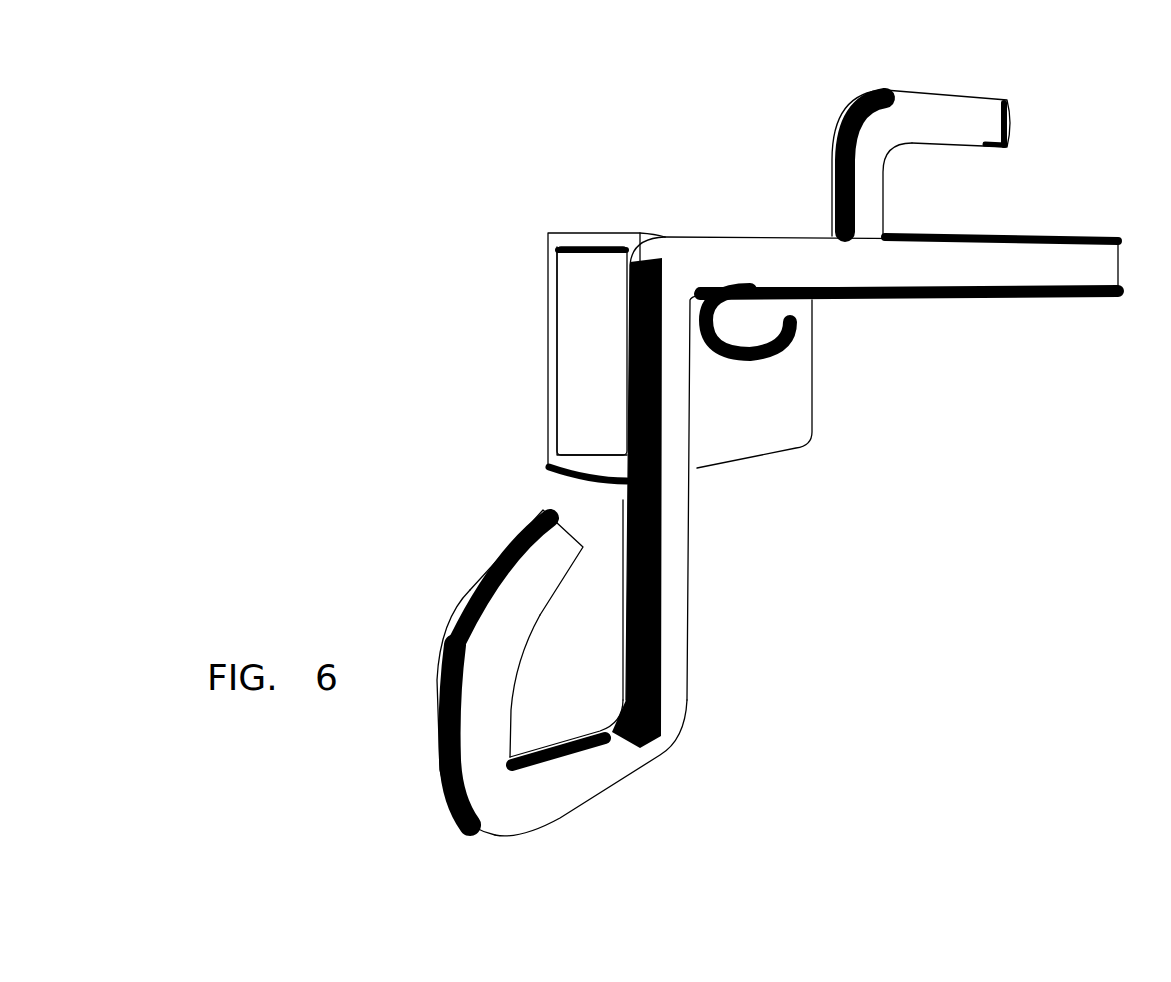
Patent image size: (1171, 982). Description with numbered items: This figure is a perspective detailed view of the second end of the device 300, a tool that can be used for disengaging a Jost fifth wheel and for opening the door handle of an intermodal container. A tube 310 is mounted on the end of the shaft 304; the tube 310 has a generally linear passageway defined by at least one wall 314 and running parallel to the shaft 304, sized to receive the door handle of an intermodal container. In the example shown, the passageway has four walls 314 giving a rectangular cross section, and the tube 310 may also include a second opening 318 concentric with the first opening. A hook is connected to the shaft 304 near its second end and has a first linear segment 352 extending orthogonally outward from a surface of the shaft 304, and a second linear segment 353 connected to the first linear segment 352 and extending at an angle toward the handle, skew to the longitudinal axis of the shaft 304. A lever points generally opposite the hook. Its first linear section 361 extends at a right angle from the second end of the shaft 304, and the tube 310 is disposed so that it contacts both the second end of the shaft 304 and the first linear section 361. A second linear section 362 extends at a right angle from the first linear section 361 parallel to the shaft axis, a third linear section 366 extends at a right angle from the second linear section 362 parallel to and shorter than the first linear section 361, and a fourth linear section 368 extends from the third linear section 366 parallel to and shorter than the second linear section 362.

The device 300 is at (907, 478).
The shaft 304 is at (1072, 262).
The tube 310 is at (823, 400).
The wall 314 is at (582, 243).
The second opening 318 is at (585, 370).
The first linear segment 352 is at (842, 145).
The second linear segment 353 is at (950, 115).
The first linear section 361 is at (672, 592).
The second linear section 362 is at (602, 767).
The third linear section 366 is at (483, 742).
The fourth linear section 368 is at (520, 578).